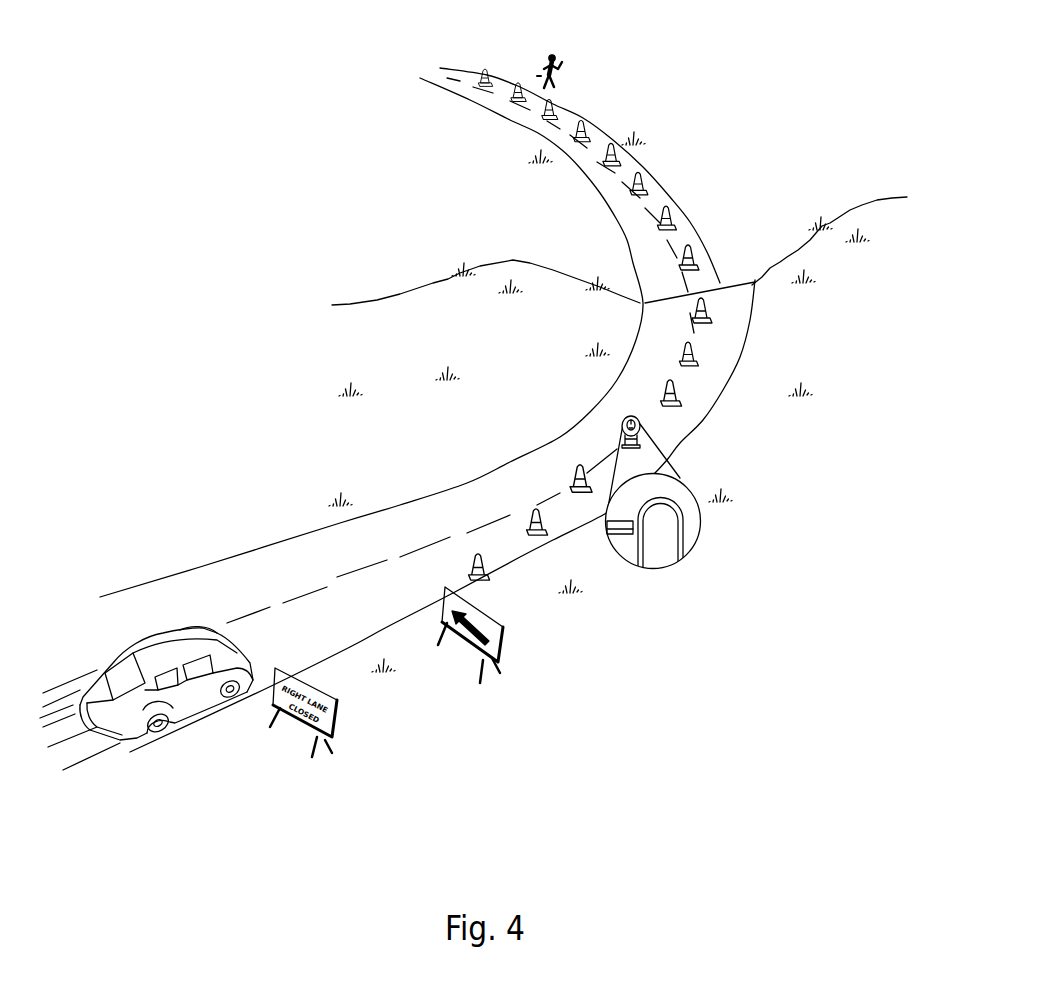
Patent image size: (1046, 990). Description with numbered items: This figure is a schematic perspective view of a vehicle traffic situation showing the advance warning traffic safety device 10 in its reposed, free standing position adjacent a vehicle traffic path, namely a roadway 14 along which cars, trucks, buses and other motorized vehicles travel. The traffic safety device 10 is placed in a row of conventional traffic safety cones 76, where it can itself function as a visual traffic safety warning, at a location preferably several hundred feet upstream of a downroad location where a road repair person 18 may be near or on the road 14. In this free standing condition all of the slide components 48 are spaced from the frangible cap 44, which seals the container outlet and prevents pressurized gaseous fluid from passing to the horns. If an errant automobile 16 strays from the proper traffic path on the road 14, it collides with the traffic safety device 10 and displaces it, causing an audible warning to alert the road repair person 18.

The traffic safety device 10 is at (641, 440).
The roadway 14 is at (436, 508).
The automobile 16 is at (193, 700).
The road repair person 18 is at (555, 60).
The frangible cap 44 is at (681, 543).
The slide components 48 is at (624, 534).
The traffic safety cones 76 is at (488, 572).